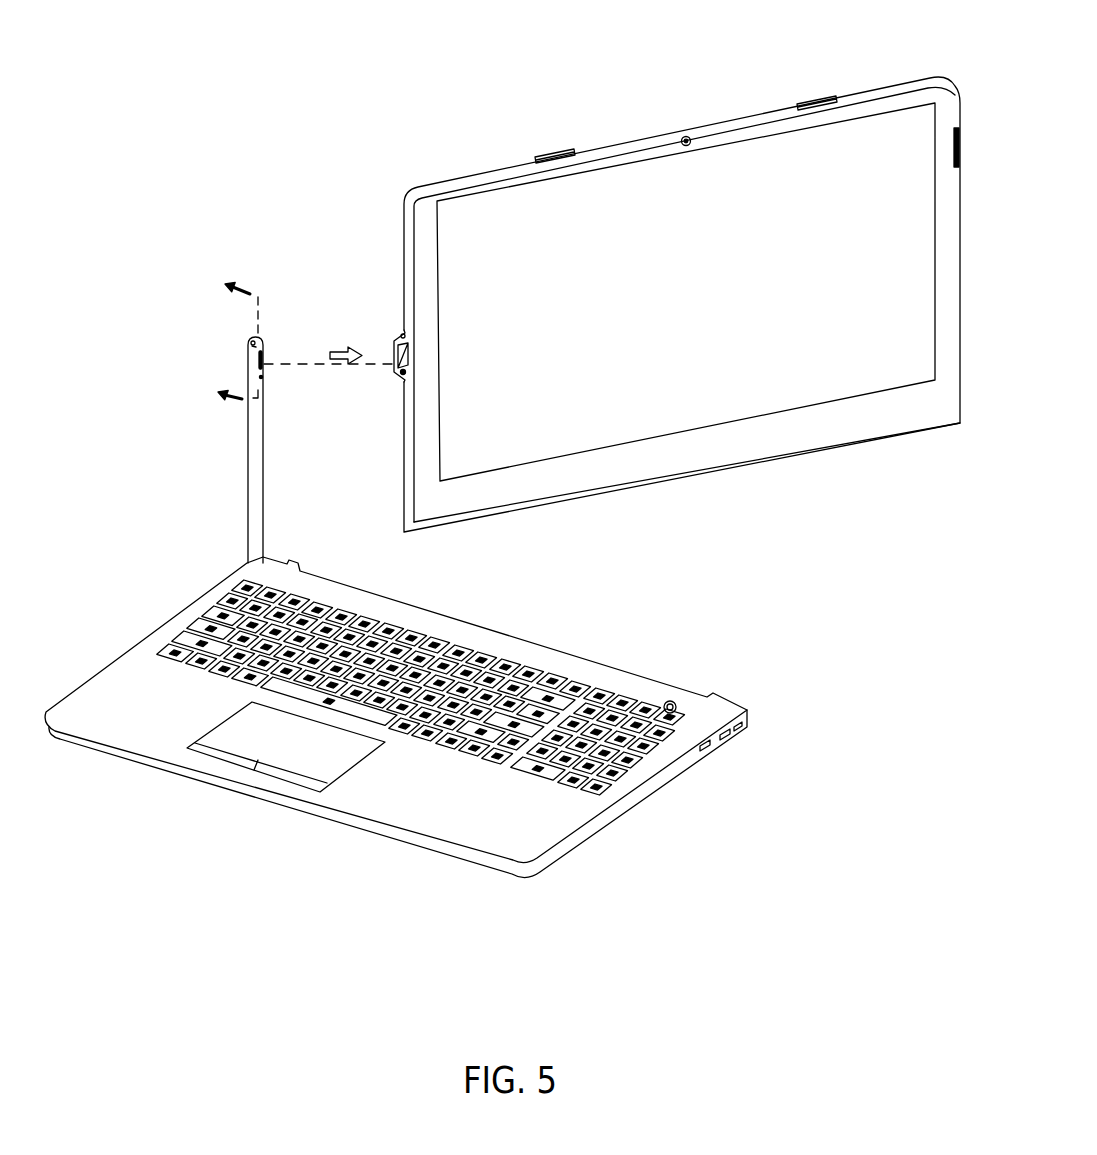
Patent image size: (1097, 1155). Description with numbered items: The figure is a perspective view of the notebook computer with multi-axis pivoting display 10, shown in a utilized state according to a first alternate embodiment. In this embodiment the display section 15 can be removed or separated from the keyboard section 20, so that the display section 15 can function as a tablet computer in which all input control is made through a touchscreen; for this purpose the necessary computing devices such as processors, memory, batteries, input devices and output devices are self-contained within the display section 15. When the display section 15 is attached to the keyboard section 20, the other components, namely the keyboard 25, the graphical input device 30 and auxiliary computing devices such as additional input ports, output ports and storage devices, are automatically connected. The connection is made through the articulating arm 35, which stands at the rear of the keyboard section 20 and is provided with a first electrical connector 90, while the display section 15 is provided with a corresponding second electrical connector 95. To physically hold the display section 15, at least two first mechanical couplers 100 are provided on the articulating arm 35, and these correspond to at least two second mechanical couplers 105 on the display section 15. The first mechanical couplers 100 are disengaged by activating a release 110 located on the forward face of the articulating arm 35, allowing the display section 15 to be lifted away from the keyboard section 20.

The notebook computer with multi-axis pivoting display 10 is at (224, 127).
The display section 15 is at (695, 312).
The keyboard section 20 is at (530, 828).
The keyboard 25 is at (632, 745).
The graphical input device 30 is at (310, 750).
The articulating arm 35 is at (247, 432).
The first electrical connector 90 is at (260, 360).
The second electrical connector 95 is at (393, 366).
The first mechanical couplers 100 is at (250, 342).
The second mechanical couplers 105 is at (401, 333).
The release 110 is at (250, 346).